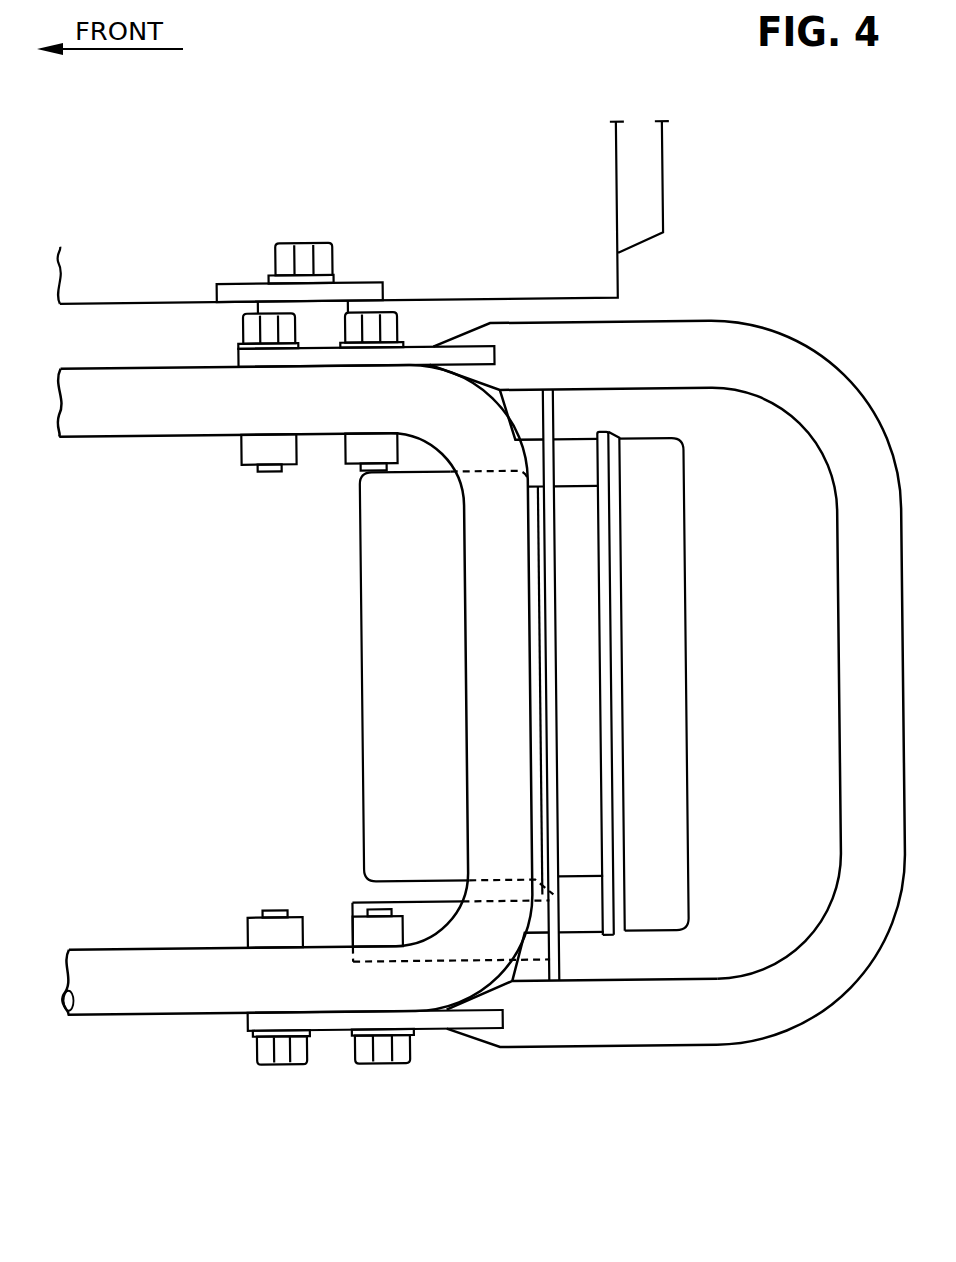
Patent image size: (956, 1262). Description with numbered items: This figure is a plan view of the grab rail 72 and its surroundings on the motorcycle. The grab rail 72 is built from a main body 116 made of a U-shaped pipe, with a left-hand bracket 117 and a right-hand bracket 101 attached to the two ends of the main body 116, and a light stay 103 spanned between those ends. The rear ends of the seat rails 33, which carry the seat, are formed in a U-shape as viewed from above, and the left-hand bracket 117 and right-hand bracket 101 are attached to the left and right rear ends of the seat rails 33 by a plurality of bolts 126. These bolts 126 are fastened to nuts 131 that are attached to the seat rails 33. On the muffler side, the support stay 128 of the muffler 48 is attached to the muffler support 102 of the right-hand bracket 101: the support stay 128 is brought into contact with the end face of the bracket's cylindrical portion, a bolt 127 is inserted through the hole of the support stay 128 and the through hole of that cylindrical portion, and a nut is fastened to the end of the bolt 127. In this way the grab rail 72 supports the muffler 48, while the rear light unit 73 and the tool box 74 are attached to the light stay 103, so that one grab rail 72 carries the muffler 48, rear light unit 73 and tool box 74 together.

The seat rails 33 is at (155, 993).
The muffler 48 is at (668, 166).
The grab rail 72 is at (809, 331).
The rear light unit 73 is at (668, 669).
The tool box 74 is at (372, 670).
The right-hand bracket 101 is at (337, 355).
The muffler support 102 is at (331, 320).
The light stay 103 is at (558, 411).
The main body 116 is at (704, 1027).
The left-hand bracket 117 is at (423, 1017).
The bolts 126 is at (251, 327).
The bolt 127 is at (305, 250).
The support stay 128 is at (239, 287).
The nuts 131 is at (253, 454).